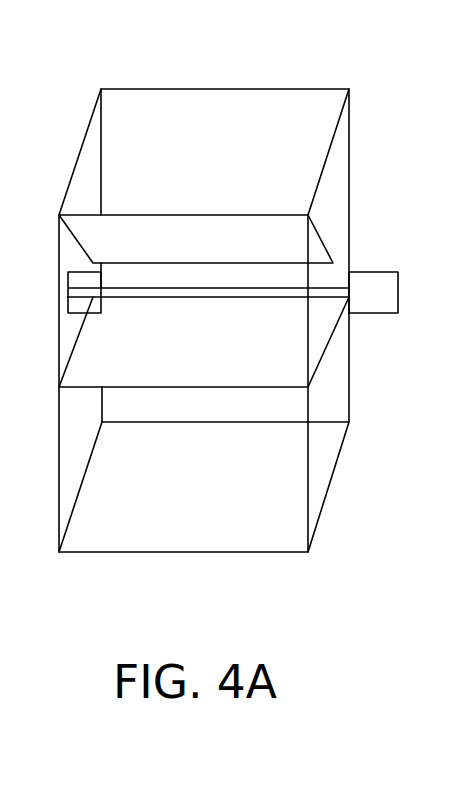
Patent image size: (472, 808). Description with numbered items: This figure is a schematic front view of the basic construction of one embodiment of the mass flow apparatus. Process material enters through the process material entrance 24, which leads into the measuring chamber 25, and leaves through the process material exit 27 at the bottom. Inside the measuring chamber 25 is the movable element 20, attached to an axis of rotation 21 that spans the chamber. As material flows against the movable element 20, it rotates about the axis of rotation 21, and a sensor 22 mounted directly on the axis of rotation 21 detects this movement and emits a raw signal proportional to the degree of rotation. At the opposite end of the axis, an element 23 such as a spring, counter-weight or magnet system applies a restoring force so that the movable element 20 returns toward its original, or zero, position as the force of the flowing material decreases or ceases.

The movable element 20 is at (100, 358).
The axis of rotation 21 is at (160, 288).
The sensor 22 is at (385, 272).
The restoring force element 23 is at (65, 297).
The process material entrance 24 is at (178, 118).
The measuring chamber 25 is at (349, 200).
The process material exit 27 is at (213, 523).